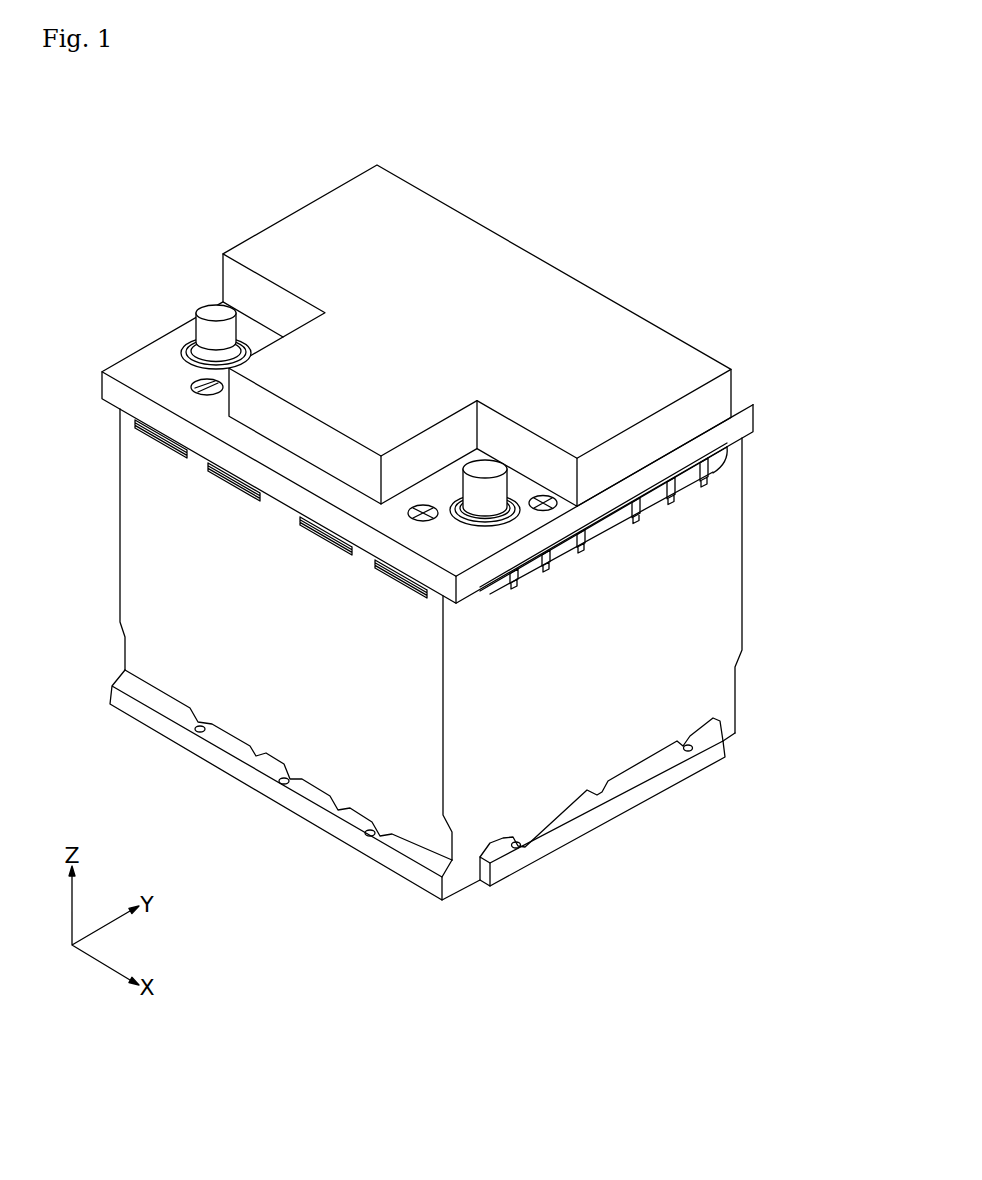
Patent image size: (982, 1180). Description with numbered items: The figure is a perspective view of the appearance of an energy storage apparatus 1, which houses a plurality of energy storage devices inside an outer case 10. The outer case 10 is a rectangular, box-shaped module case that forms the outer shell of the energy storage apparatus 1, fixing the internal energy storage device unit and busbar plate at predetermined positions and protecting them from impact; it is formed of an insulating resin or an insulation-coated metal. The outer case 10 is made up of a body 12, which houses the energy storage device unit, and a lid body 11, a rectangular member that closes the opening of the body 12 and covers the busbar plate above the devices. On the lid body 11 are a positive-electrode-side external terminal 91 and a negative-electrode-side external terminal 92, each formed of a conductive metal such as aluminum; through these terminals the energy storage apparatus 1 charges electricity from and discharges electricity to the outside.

The energy storage apparatus 1 is at (465, 500).
The outer case 10 is at (465, 384).
The lid body 11 is at (677, 363).
The body 12 is at (717, 484).
The positive-electrode-side external terminal 91 is at (486, 466).
The negative-electrode-side external terminal 92 is at (216, 309).